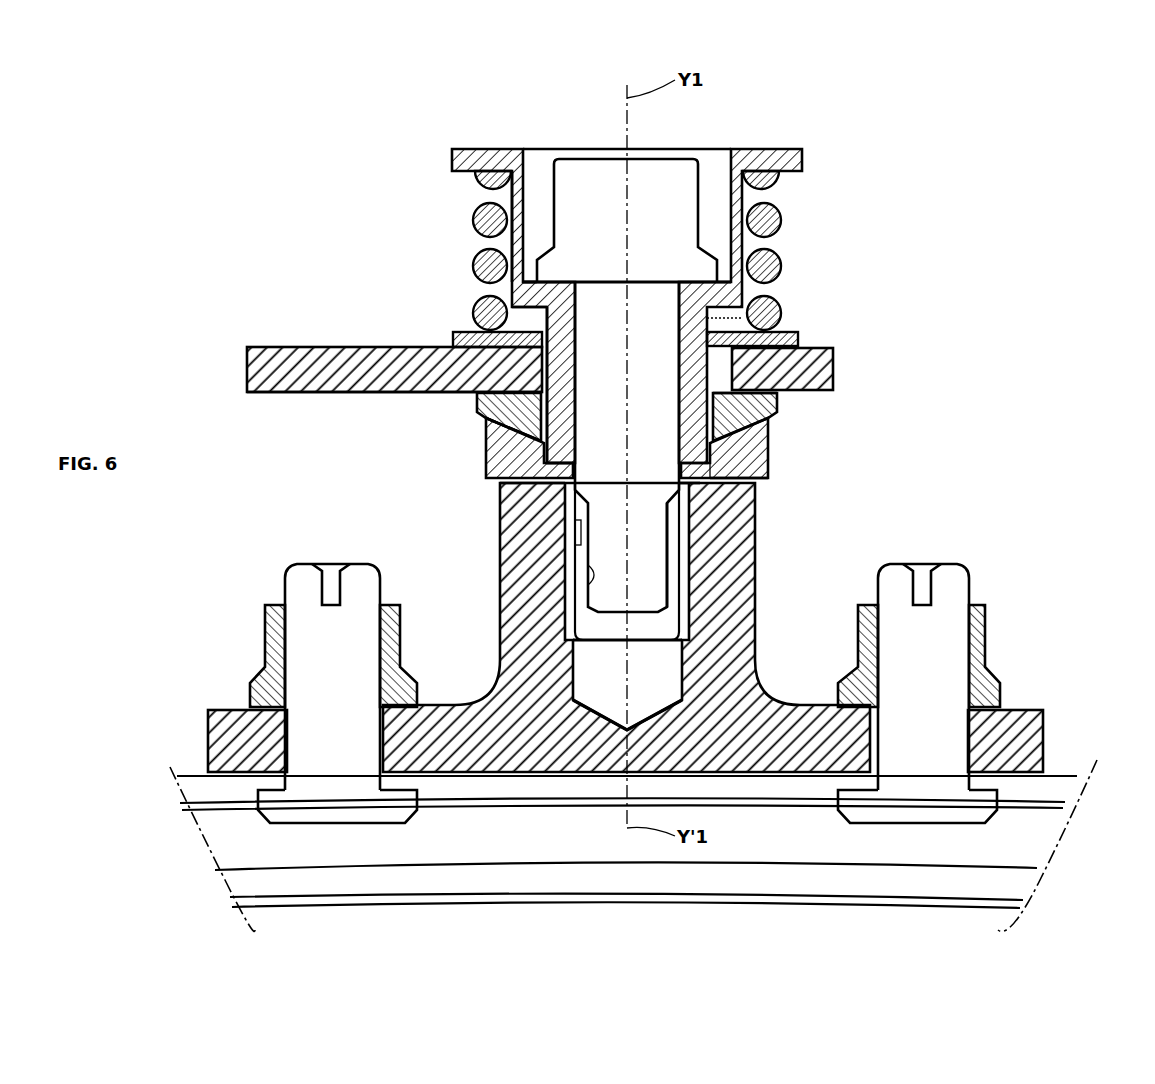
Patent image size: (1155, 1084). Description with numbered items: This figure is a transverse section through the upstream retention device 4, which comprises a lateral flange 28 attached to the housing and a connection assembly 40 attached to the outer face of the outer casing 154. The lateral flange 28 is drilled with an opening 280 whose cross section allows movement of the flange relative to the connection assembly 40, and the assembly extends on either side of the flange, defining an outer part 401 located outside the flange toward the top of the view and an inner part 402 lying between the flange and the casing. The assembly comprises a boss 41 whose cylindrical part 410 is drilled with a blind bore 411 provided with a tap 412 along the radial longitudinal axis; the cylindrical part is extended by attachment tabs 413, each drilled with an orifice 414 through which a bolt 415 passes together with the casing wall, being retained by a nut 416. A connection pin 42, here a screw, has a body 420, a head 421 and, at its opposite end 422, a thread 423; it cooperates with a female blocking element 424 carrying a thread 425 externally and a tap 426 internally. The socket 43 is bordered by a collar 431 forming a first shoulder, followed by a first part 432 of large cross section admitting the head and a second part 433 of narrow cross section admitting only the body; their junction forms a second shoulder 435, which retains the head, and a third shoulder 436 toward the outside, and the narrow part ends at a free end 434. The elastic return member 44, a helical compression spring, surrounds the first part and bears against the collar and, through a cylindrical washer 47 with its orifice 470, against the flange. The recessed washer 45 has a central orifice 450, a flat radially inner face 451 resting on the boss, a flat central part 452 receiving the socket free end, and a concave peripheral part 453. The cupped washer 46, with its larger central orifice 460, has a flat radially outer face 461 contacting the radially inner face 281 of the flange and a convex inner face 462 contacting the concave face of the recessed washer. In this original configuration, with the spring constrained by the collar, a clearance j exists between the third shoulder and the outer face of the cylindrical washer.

The upstream retention device 4 is at (362, 180).
The connection assembly 40 is at (929, 229).
The outer part 401 is at (866, 147).
The inner part 402 is at (1078, 388).
The boss 41 is at (758, 602).
The cylindrical part 410 is at (727, 633).
The bore 411 is at (644, 683).
The tap 412 is at (575, 607).
The attachment tab 413 is at (1017, 737).
The orifice 414 is at (280, 740).
The bolt 415 is at (300, 582).
The nut 416 is at (277, 643).
The connection pin 42 is at (685, 124).
The body 420 is at (644, 397).
The head 421 is at (644, 226).
The opposite end 422 is at (644, 587).
The thread 423 is at (672, 556).
The female blocking element 424 is at (572, 490).
The thread 425 is at (572, 540).
The tap 426 is at (590, 576).
The socket 43 is at (475, 145).
The collar 431 is at (770, 160).
The first part 432 is at (518, 207).
The second part 433 is at (560, 362).
The free end 434 is at (555, 453).
The second shoulder 435 is at (530, 265).
The third shoulder 436 is at (527, 318).
The elastic return member 44 is at (764, 222).
The recessed washer 45 is at (498, 462).
The central orifice 450 is at (688, 486).
The radially inner face 451 is at (762, 487).
The central part 452 is at (690, 480).
The peripheral part 453 is at (712, 428).
The cupped washer 46 is at (512, 404).
The central orifice 460 is at (545, 415).
The flat radially outer face 461 is at (752, 384).
The convex inner face 462 is at (777, 413).
The cylindrical washer 47 is at (457, 341).
The orifice 470 is at (712, 340).
The clearance j is at (735, 318).
The lateral flange 28 is at (280, 366).
The opening 280 is at (720, 370).
The radially inner face 281 is at (307, 396).
The outer casing 154 is at (1025, 790).